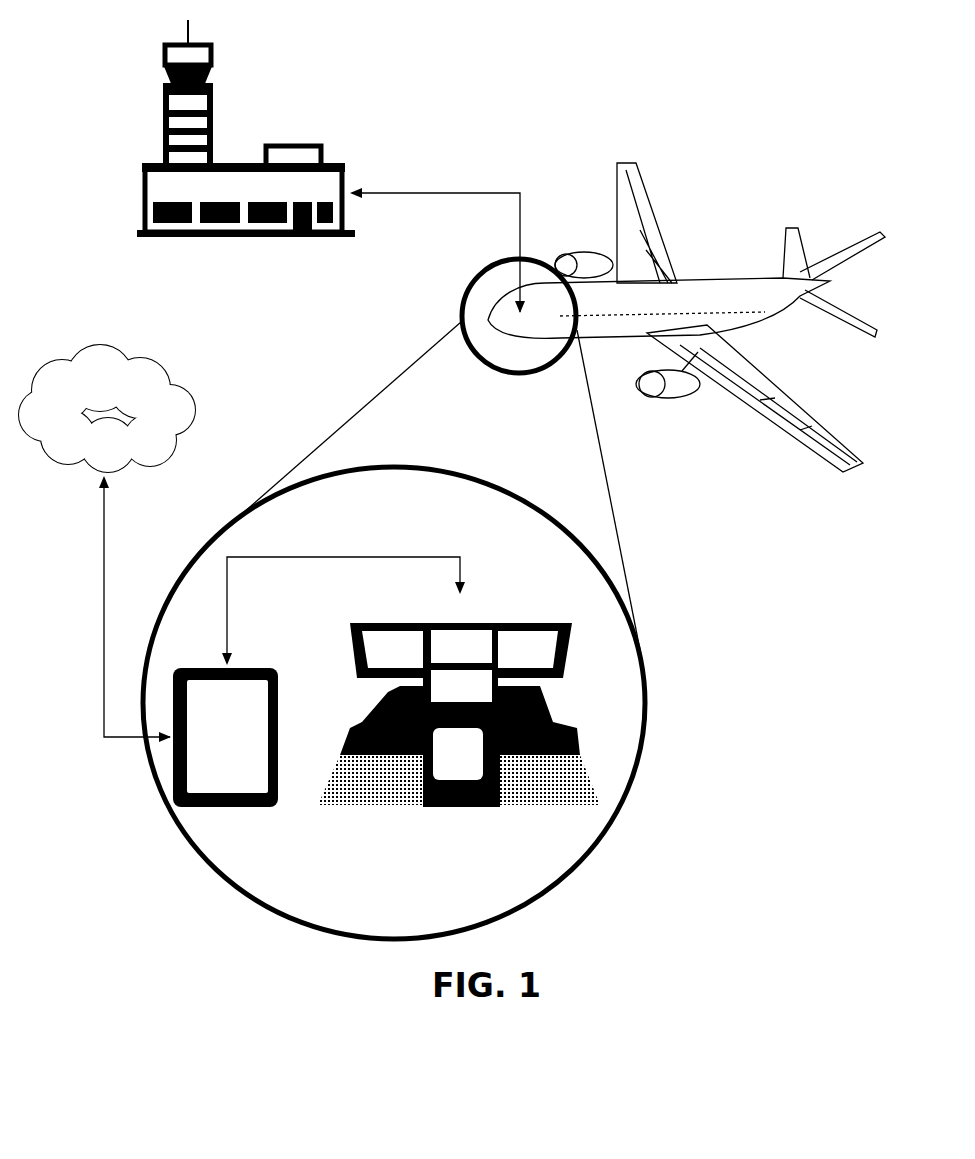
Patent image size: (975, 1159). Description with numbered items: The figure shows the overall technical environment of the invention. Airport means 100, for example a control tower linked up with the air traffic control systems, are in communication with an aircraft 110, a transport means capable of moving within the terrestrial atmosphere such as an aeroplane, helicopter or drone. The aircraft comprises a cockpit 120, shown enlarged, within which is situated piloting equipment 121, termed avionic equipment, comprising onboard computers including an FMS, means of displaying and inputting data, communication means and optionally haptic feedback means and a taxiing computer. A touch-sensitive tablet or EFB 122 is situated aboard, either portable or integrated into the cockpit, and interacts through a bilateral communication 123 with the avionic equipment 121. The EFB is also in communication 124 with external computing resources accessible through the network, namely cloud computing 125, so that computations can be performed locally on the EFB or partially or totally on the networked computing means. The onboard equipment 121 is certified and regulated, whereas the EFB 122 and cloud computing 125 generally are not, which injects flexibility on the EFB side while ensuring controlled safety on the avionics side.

The airport means 100 is at (227, 40).
The aircraft 110 is at (655, 167).
The cockpit 120 is at (478, 278).
The piloting equipment 121 is at (515, 613).
The EFB 122 is at (250, 655).
The bilateral communication 123 is at (333, 552).
The communication 124 is at (107, 600).
The cloud computing 125 is at (128, 348).